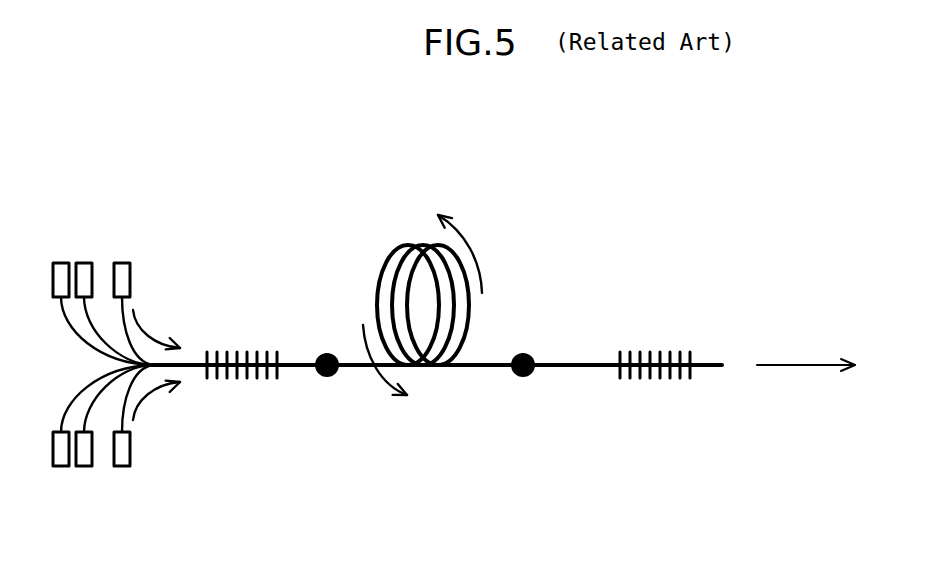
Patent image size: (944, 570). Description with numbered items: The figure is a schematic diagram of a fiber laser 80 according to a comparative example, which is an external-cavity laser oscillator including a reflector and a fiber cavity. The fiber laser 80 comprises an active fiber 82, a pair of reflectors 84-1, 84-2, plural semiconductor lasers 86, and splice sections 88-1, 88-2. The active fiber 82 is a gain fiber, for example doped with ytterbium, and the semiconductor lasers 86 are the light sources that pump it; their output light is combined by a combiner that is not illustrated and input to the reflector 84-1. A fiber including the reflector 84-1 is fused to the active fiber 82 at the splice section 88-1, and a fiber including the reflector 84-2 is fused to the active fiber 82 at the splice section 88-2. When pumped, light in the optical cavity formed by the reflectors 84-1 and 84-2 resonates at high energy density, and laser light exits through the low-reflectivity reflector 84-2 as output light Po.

The fiber laser 80 is at (570, 218).
The active fiber 82 is at (400, 218).
The reflector 84-1 is at (242, 348).
The reflector 84-2 is at (655, 349).
The semiconductor lasers 86 is at (62, 263).
The splice section 88-1 is at (327, 377).
The splice section 88-2 is at (523, 377).